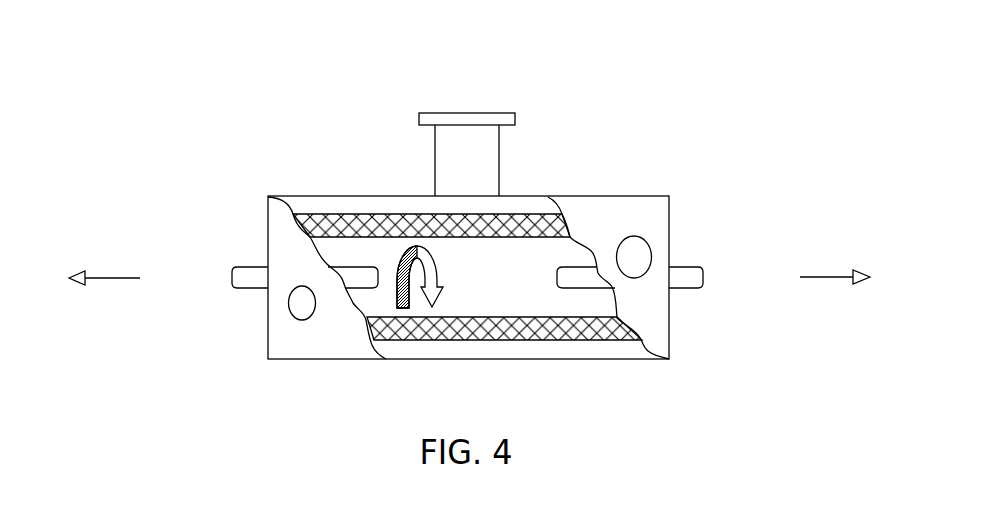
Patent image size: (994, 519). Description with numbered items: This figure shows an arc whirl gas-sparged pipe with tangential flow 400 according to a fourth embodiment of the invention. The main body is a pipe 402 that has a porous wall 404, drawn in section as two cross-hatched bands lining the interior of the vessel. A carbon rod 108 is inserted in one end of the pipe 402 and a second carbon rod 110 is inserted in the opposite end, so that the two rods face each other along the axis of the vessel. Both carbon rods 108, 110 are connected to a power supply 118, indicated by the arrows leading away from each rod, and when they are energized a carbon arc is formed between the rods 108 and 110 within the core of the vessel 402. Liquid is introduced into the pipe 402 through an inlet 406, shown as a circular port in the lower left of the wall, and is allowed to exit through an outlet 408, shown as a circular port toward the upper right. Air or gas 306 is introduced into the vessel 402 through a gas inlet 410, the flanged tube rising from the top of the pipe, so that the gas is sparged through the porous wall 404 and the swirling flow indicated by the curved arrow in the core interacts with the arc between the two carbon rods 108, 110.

The carbon rod 108 is at (230, 276).
The carbon rod 110 is at (705, 277).
The power supply 118 is at (479, 270).
The air or gas 306 is at (463, 94).
The arc whirl gas-sparged pipe with tangential flow 400 is at (706, 163).
The pipe 402 is at (303, 346).
The porous wall 404 is at (583, 330).
The inlet 406 is at (289, 312).
The outlet 408 is at (650, 244).
The gas inlet 410 is at (501, 158).